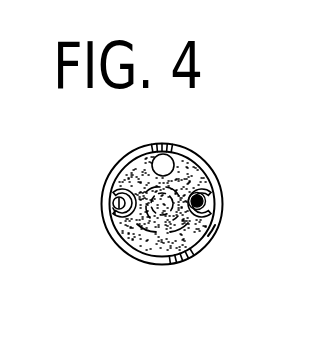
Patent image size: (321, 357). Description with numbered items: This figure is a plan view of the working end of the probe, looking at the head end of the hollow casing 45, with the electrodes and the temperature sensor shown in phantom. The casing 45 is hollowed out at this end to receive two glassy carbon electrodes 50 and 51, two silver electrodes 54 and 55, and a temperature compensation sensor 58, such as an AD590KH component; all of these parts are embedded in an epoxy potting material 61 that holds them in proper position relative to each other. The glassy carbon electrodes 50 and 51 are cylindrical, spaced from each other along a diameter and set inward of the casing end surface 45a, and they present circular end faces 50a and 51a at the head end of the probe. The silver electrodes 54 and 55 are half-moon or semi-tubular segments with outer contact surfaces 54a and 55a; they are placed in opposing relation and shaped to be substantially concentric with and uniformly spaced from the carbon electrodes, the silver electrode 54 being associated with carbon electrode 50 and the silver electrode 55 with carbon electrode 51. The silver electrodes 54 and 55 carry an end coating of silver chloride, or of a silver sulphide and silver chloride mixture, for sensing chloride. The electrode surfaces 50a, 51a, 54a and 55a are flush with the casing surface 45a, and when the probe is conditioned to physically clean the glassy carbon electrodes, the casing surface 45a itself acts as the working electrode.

The casing 45 is at (158, 150).
The casing end surface 45a is at (216, 225).
The glassy carbon electrode 50 is at (116, 194).
The circular end face 50a is at (113, 208).
The glassy carbon electrode 51 is at (207, 190).
The circular end face 51a is at (206, 201).
The silver electrode 54 is at (132, 189).
The end contact surface 54a is at (131, 232).
The silver electrode 55 is at (203, 182).
The end contact surface 55a is at (196, 235).
The temperature compensation sensor 58 is at (191, 152).
The epoxy potting material 61 is at (165, 245).